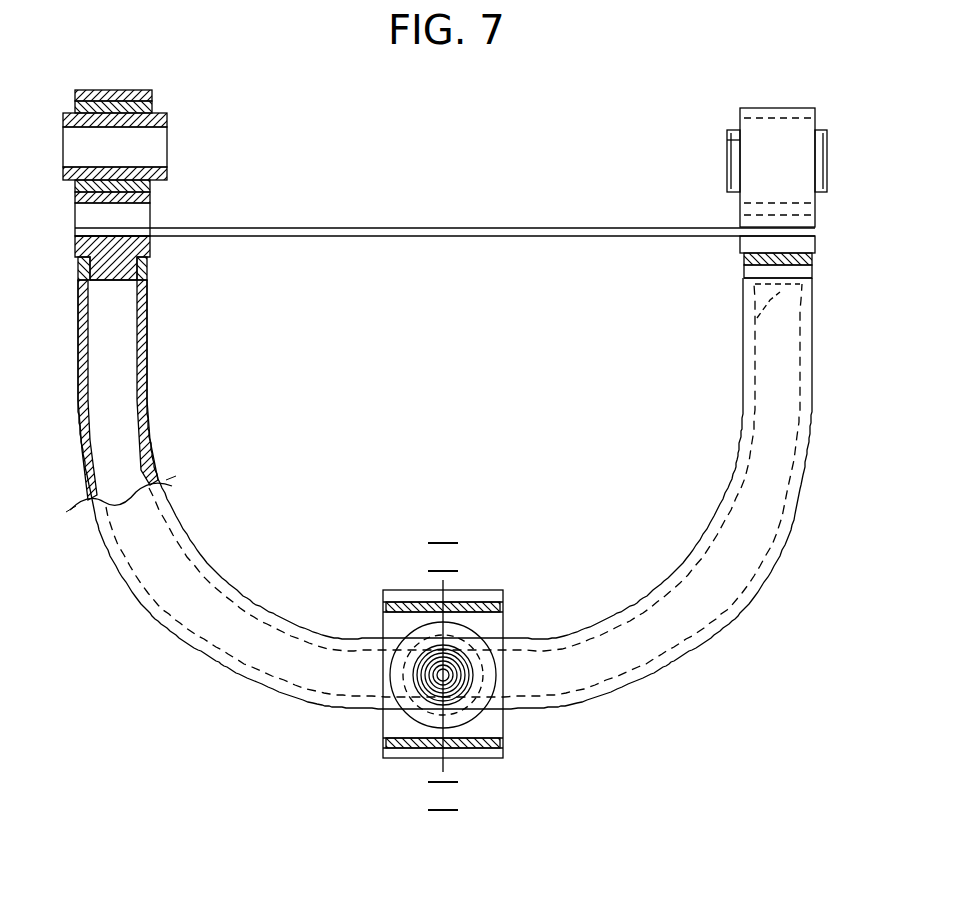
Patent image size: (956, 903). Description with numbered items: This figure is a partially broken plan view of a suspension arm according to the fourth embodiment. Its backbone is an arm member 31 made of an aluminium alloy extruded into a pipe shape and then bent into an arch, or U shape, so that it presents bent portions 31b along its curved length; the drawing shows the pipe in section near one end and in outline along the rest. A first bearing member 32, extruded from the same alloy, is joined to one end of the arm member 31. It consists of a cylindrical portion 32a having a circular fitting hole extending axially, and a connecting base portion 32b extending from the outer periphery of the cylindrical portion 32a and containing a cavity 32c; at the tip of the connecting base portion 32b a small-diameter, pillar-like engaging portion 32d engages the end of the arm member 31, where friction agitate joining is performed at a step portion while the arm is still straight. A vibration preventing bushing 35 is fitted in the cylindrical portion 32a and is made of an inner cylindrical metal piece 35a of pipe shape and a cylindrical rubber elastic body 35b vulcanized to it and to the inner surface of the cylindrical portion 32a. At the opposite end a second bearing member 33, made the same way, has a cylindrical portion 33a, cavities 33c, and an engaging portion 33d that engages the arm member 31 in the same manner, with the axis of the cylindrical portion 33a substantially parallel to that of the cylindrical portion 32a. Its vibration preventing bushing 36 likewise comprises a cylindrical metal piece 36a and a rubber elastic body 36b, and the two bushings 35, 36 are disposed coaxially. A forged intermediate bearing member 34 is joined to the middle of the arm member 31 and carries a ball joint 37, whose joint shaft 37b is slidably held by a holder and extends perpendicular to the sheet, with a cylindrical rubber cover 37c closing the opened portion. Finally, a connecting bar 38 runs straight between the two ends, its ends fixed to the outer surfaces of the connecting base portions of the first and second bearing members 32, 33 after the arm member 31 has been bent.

The arm member 31 is at (660, 573).
The bent portions 31b is at (240, 638).
The first bearing member 32 is at (194, 237).
The cylindrical portion 32a is at (152, 197).
The connecting base portion 32b is at (123, 249).
The cavity 32c is at (128, 216).
The engaging portion 32d is at (117, 277).
The second bearing member 33 is at (691, 213).
The cylindrical portion 33a is at (752, 172).
The cavities 33c is at (740, 213).
The engaging portion 33d is at (743, 318).
The intermediate bearing member 34 is at (375, 592).
The vibration preventing bushing 35 is at (192, 124).
The inner cylindrical metal piece 35a is at (163, 122).
The rubber elastic body 35b is at (150, 110).
The vibration preventing bushing 36 is at (697, 135).
The cylindrical metal piece 36a is at (727, 158).
The rubber elastic body 36b is at (732, 128).
The ball joint 37 is at (487, 645).
The joint shaft 37b is at (447, 675).
The rubber cover 37c is at (472, 717).
The connecting bar 38 is at (472, 216).